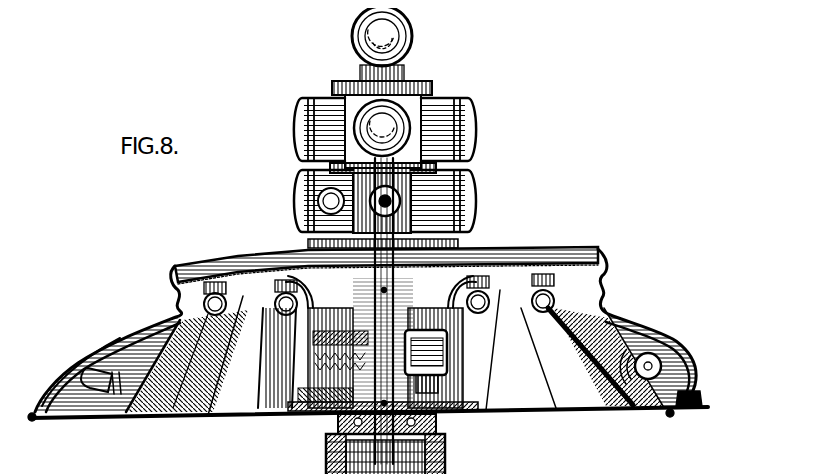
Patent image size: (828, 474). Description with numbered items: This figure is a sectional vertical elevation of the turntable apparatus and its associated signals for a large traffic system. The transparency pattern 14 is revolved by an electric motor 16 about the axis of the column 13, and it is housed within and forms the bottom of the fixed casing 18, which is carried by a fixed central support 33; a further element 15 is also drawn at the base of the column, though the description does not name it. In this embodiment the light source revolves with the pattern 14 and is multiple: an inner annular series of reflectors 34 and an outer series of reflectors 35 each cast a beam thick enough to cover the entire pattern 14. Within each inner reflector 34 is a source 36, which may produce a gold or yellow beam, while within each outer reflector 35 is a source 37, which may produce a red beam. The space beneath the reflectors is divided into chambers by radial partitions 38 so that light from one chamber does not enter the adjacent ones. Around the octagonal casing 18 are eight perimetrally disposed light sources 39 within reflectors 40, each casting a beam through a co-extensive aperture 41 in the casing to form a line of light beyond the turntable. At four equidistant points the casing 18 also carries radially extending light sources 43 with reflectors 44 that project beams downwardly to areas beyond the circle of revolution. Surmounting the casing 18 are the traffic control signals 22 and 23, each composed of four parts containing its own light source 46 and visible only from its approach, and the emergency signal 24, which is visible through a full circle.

The column 13 is at (437, 460).
The transparency pattern 14 is at (223, 411).
The flange 15 is at (430, 418).
The electric motor 16 is at (472, 341).
The fixed casing 18 is at (522, 237).
The signal 22 is at (470, 186).
The signal 23 is at (467, 121).
The emergency signal 24 is at (393, 27).
The fixed central support 33 is at (388, 234).
The inner reflector 34 is at (290, 250).
The outer reflector 35 is at (196, 256).
The inner light source 36 is at (238, 254).
The outer light source 37 is at (165, 310).
The radial partition 38 is at (245, 394).
The perimetrally disposed light source 39 is at (654, 343).
The reflector 40 is at (680, 355).
The aperture 41 is at (670, 401).
The radially extending light source 43 is at (88, 374).
The reflector 44 is at (50, 370).
The light source 46 is at (316, 186).